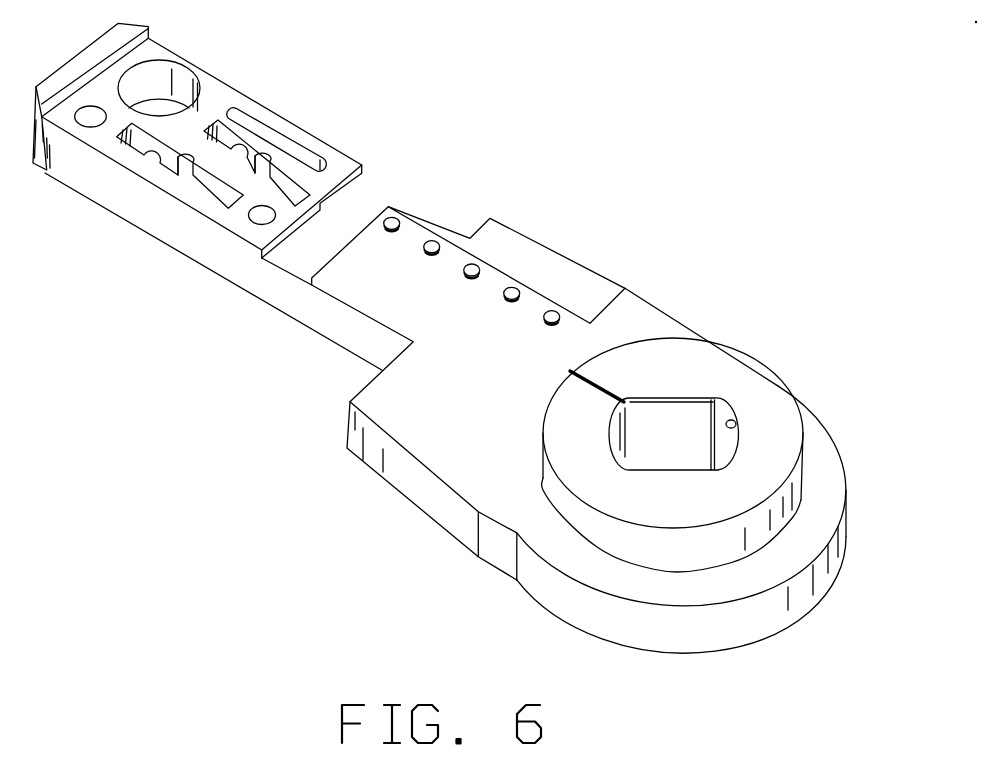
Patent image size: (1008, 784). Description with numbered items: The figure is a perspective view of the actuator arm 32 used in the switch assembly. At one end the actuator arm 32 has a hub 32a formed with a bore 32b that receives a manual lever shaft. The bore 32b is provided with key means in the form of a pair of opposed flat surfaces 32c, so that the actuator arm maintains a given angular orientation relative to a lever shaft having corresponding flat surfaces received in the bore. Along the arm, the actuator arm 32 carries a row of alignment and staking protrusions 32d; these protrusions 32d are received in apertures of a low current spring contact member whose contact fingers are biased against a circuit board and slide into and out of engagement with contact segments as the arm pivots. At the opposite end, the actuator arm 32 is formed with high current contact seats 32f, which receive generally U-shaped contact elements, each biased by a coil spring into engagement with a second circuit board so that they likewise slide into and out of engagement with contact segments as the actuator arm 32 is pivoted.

The actuator arm 32 is at (657, 300).
The hub 32a is at (563, 495).
The bore 32b is at (732, 420).
The opposed flat surfaces 32c is at (695, 470).
The alignment and staking protrusions 32d is at (472, 269).
The high current contact seats 32f is at (150, 153).